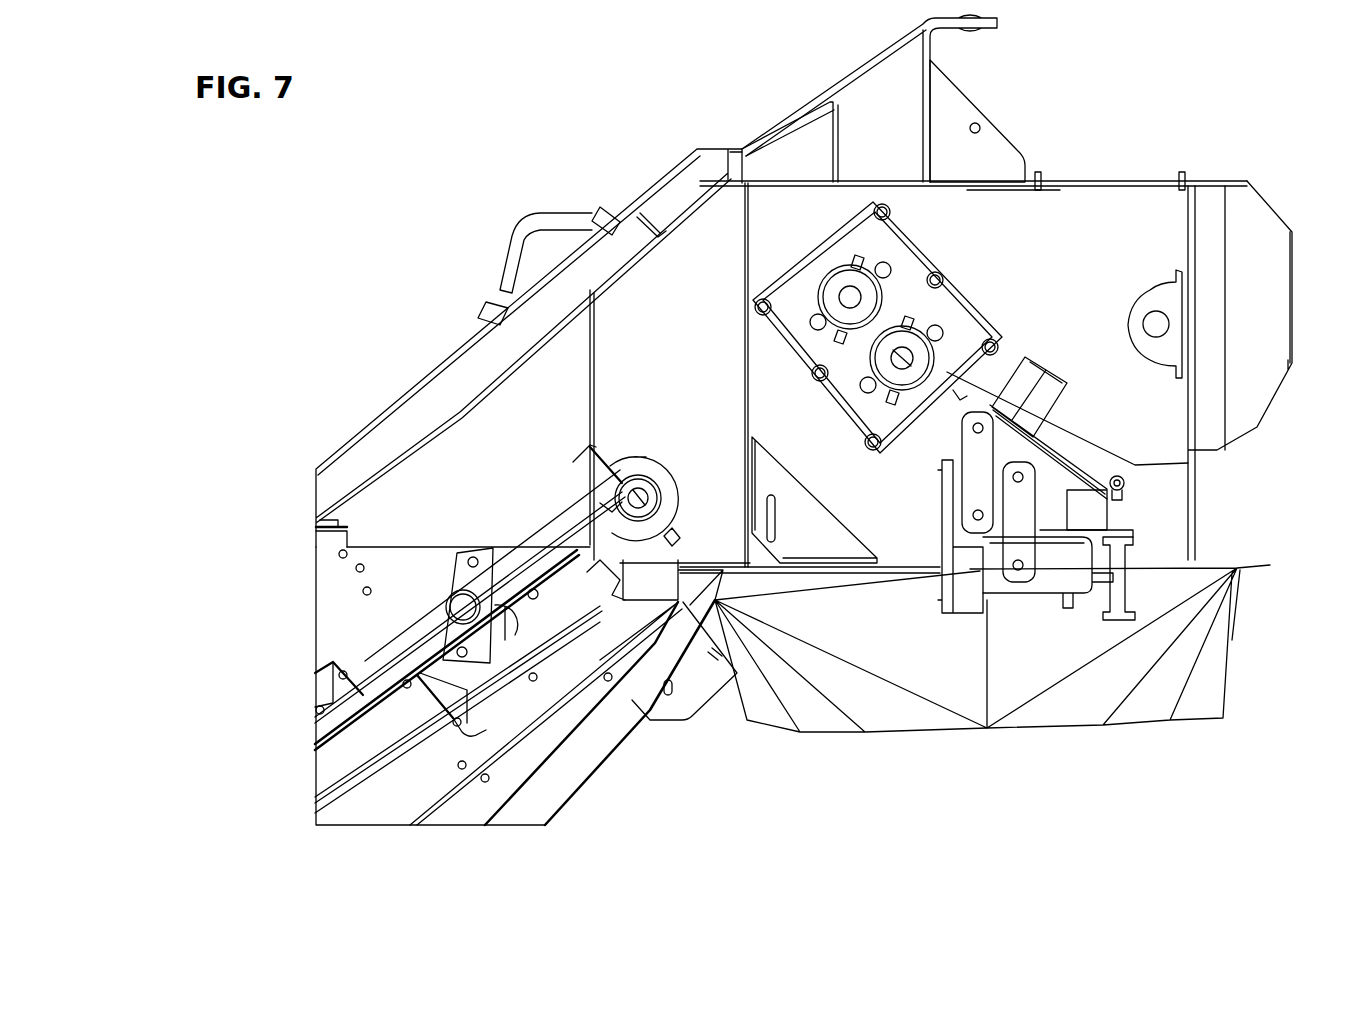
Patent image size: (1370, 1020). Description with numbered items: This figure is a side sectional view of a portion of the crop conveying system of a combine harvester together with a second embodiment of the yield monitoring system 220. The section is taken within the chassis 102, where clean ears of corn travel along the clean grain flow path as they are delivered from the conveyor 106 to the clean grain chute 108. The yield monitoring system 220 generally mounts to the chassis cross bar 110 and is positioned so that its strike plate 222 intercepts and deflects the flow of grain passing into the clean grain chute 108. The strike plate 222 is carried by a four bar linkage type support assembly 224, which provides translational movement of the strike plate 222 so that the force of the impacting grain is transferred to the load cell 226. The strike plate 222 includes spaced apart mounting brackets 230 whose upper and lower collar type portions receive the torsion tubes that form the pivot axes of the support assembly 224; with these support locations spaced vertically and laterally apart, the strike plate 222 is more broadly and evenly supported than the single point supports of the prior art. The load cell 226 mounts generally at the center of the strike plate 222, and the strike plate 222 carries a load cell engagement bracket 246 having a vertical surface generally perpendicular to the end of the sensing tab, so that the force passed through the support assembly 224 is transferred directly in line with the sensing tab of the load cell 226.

The chassis 102 is at (1208, 243).
The conveyor 106 is at (647, 467).
The clean grain chute 108 is at (890, 605).
The chassis cross bar 110 is at (1087, 513).
The yield monitoring system 220 is at (1000, 758).
The strike plate 222 is at (942, 490).
The four bar linkage type support assembly 224 is at (1076, 449).
The load cell 226 is at (1120, 577).
The mounting brackets 230 is at (953, 533).
The load cell engagement bracket 246 is at (1038, 600).